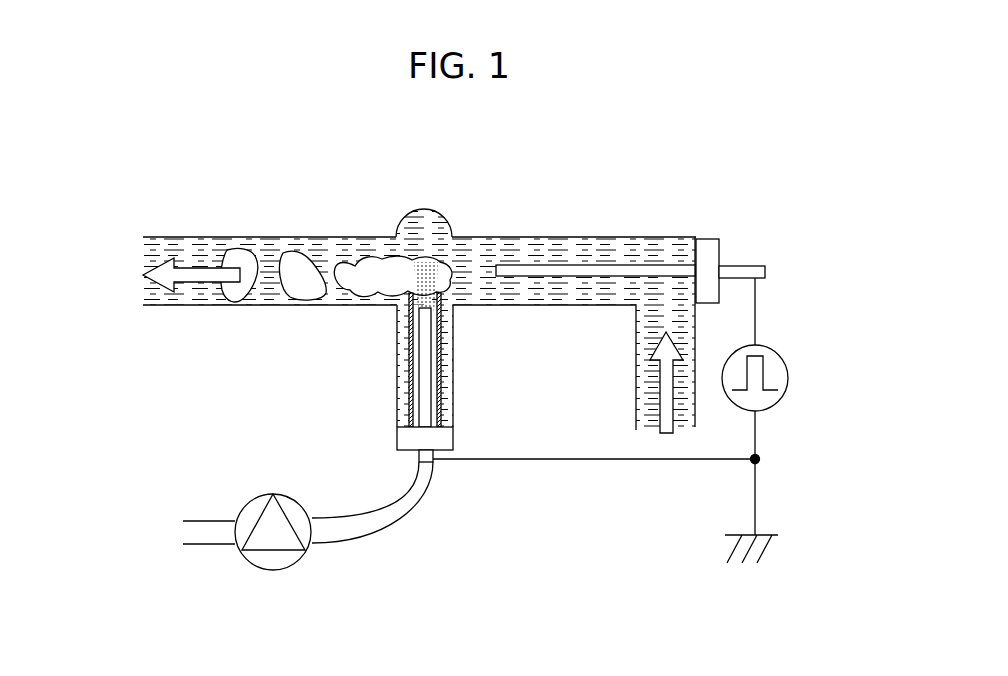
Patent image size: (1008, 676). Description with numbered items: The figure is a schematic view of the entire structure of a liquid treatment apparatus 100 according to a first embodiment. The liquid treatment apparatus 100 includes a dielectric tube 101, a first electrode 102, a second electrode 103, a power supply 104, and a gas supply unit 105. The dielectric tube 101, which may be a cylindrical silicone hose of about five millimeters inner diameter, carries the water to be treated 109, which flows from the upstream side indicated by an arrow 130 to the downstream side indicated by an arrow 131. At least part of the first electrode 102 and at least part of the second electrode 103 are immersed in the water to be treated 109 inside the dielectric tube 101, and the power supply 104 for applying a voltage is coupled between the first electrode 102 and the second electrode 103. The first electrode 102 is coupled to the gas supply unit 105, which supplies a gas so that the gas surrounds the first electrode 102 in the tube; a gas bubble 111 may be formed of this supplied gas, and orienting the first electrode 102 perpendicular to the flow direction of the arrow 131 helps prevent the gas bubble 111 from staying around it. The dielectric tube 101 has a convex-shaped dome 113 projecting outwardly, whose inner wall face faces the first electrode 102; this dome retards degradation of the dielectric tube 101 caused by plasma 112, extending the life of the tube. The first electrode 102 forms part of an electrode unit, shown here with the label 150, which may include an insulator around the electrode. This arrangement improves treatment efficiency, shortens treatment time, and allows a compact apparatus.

The liquid treatment apparatus 100 is at (247, 144).
The dielectric tube 101 is at (664, 253).
The first electrode 102 is at (439, 428).
The second electrode 103 is at (744, 268).
The power supply 104 is at (790, 378).
The gas supply unit 105 is at (273, 572).
The water to be treated 109 is at (614, 243).
The gas bubble 111 is at (382, 268).
The plasma 112 is at (424, 267).
The convex-shaped dome 113 is at (415, 193).
The arrow 130 is at (665, 393).
The arrow 131 is at (185, 237).
The holding block 150 is at (420, 455).